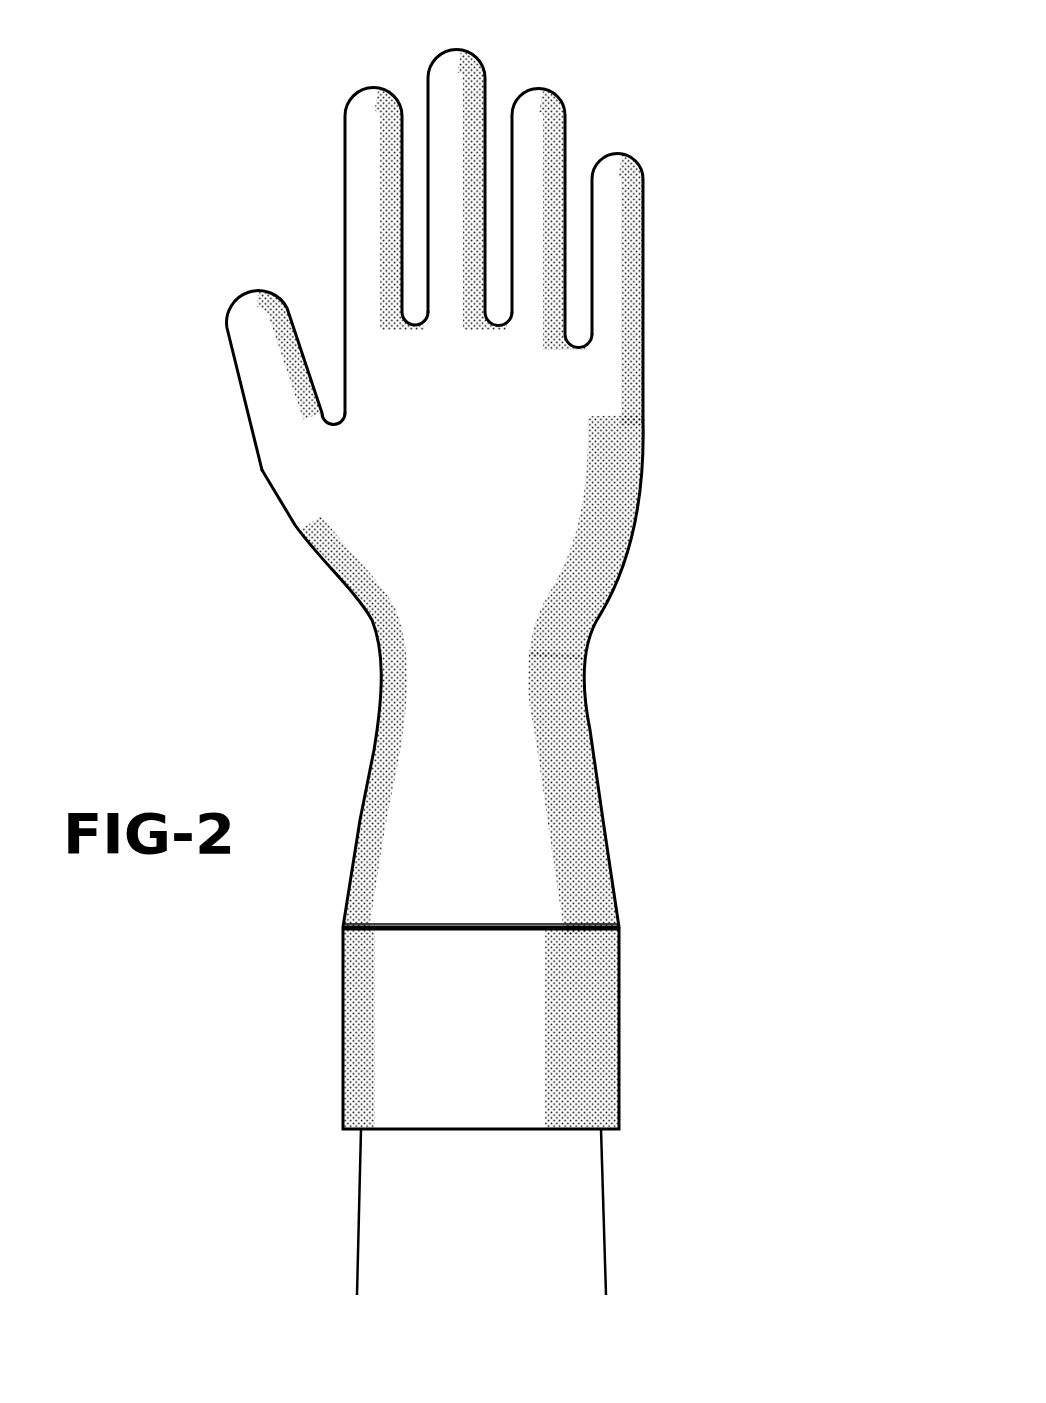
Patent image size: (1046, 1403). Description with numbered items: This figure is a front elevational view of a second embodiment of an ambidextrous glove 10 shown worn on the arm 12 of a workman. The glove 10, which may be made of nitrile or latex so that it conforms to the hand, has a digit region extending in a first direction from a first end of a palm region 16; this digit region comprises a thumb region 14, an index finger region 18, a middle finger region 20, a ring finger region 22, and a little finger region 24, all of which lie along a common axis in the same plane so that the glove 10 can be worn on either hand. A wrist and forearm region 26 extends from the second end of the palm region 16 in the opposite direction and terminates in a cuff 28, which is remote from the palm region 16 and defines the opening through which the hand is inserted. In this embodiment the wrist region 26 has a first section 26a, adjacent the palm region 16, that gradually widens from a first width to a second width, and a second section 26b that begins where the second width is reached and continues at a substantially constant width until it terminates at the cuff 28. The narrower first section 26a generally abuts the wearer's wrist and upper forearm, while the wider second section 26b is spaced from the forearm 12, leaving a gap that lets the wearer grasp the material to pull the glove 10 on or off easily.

The glove 10 is at (706, 279).
The arm 12 is at (575, 1219).
The thumb region 14 is at (246, 298).
The palm region 16 is at (490, 465).
The index finger region 18 is at (367, 105).
The middle finger region 20 is at (452, 62).
The ring finger region 22 is at (533, 100).
The little finger region 24 is at (612, 167).
The wrist and forearm region 26 is at (497, 768).
The first section 26a is at (433, 722).
The second section 26b is at (390, 990).
The cuff 28 is at (426, 1109).